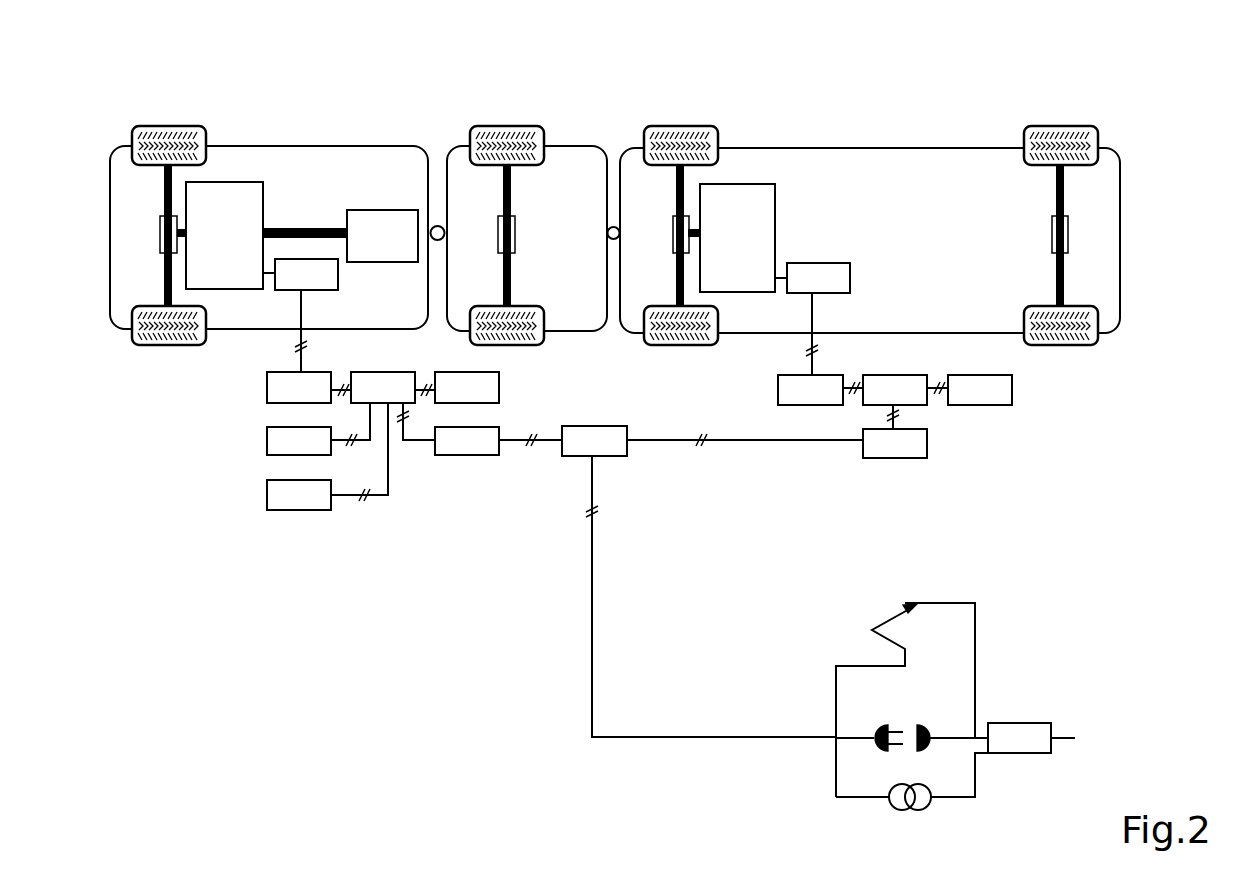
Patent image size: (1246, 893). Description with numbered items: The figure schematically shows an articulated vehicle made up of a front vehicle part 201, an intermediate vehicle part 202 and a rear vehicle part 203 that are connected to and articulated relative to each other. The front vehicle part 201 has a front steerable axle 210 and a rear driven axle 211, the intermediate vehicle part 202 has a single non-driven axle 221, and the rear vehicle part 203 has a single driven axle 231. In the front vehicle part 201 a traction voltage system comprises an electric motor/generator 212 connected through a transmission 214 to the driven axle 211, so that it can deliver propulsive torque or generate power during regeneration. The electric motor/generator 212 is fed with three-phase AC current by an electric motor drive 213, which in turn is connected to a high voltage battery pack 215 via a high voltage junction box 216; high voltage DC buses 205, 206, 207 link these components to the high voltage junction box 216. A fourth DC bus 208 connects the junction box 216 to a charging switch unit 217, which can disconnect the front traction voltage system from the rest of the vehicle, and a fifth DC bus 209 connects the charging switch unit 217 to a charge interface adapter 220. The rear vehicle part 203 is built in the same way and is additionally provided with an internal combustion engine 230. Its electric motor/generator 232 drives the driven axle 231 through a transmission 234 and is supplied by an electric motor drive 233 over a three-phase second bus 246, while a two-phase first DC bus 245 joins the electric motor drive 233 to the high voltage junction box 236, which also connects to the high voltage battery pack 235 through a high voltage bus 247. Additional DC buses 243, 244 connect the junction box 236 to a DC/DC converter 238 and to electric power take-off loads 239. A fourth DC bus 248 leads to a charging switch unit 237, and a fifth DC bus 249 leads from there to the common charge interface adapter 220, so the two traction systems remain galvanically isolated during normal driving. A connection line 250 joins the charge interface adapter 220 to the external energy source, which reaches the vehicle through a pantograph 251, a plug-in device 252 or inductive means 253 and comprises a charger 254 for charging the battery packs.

The front vehicle part 201 is at (920, 157).
The intermediate vehicle part 202 is at (527, 202).
The rear vehicle part 203 is at (320, 144).
The high voltage DC bus 205 is at (853, 385).
The high voltage DC bus 206 is at (813, 350).
The high voltage DC bus 207 is at (935, 402).
The fourth DC bus 208 is at (900, 413).
The fifth DC bus 209 is at (767, 445).
The front steerable axle 210 is at (1062, 132).
The rear driven axle 211 is at (682, 125).
The electric motor/generator 212 is at (812, 278).
The electric motor drive 213 is at (810, 390).
The transmission 214 is at (747, 195).
The high voltage battery pack 215 is at (980, 390).
The high voltage junction box 216 is at (895, 390).
The charging switch unit 217 is at (895, 443).
The charge interface adapter 220 is at (594, 441).
The non-driven axle 221 is at (507, 125).
The internal combustion engine 230 is at (383, 222).
The driven axle 231 is at (167, 123).
The electric motor/generator 232 is at (300, 274).
The electric motor drive 233 is at (299, 387).
The transmission 234 is at (240, 190).
The high voltage battery pack 235 is at (467, 387).
The high voltage junction box 236 is at (383, 387).
The charging switch unit 237 is at (467, 441).
The DC/DC converter 238 is at (299, 441).
The electric power take-off loads 239 is at (299, 495).
The DC bus 243 is at (353, 448).
The DC bus 244 is at (372, 498).
The first DC bus 245 is at (338, 395).
The second bus 246 is at (297, 347).
The high voltage bus 247 is at (427, 395).
The fourth DC bus 248 is at (428, 445).
The fifth DC bus 249 is at (537, 450).
The connection line to charging circuit 250 is at (592, 596).
The pantograph 251 is at (940, 603).
The plug-in device 252 is at (918, 713).
The inductive means 253 is at (933, 805).
The charger 254 is at (1031, 738).